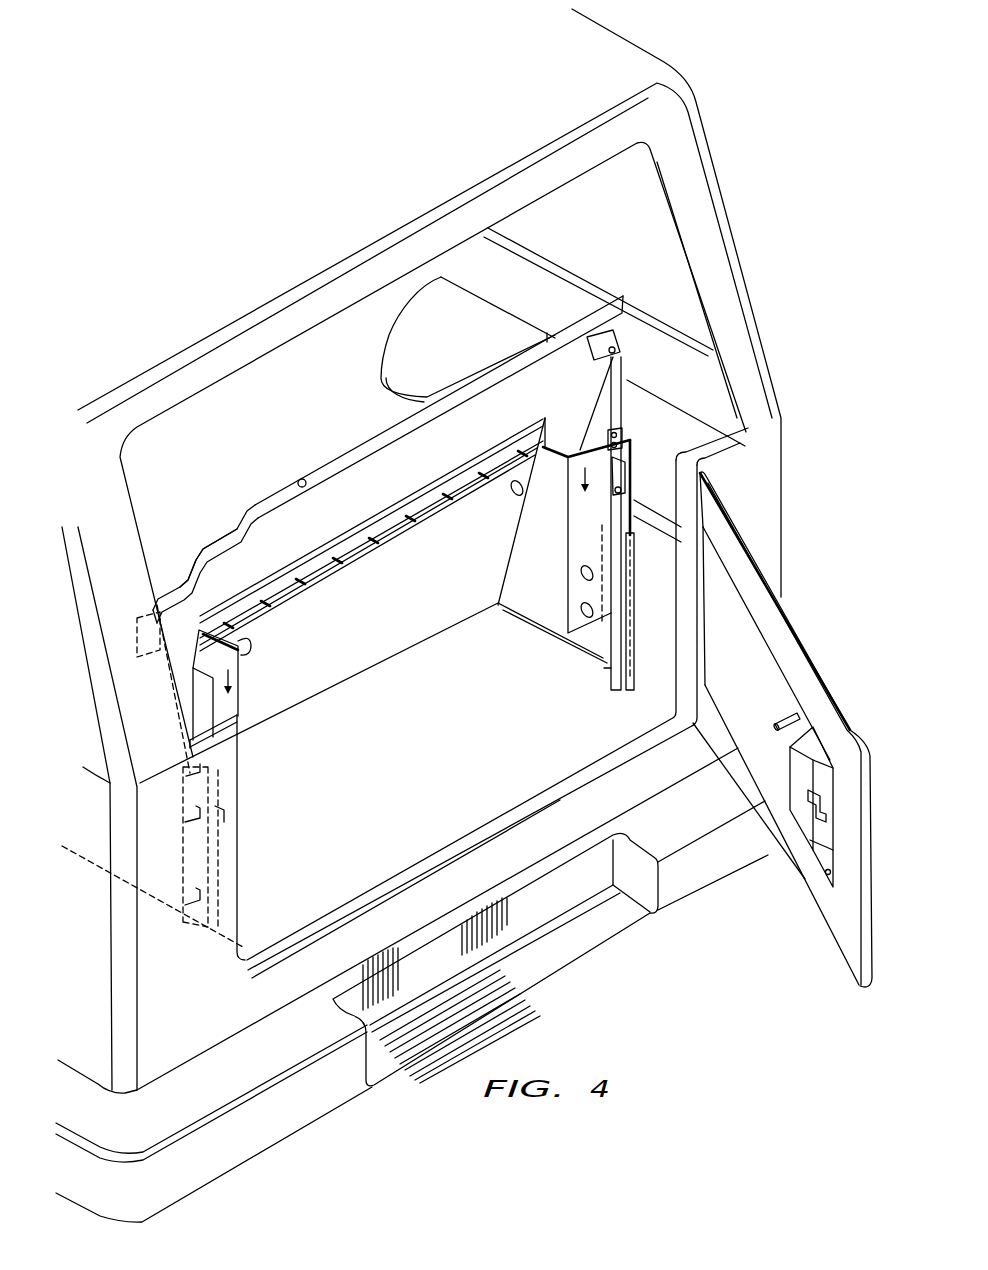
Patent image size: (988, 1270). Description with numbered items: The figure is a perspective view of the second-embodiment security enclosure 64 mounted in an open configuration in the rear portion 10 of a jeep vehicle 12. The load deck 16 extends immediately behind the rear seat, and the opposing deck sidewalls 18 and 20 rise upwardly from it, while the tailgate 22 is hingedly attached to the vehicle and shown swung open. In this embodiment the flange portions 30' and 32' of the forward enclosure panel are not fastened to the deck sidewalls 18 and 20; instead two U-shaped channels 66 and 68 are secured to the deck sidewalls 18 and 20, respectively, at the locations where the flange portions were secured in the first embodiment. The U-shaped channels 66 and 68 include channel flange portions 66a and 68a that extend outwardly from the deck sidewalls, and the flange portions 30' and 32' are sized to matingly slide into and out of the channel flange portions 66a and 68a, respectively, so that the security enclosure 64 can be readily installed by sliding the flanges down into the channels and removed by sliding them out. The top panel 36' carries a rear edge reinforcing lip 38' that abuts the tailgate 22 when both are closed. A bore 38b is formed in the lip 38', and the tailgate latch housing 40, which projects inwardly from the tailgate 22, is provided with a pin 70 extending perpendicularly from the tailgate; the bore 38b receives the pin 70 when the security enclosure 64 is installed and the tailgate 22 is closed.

The rear portion 10 is at (789, 179).
The vehicle 12 is at (708, 116).
The load deck 16 is at (434, 770).
The deck sidewall 18 is at (670, 624).
The deck sidewall 20 is at (242, 870).
The tailgate 22 is at (812, 646).
The flange portion 30' is at (564, 495).
The flange portion 32' is at (189, 685).
The top panel 36' is at (371, 535).
The rear edge reinforcing lip 38' is at (388, 459).
The bore 38b is at (300, 479).
The tailgate latch housing 40 is at (788, 772).
The security enclosure 64 is at (255, 486).
The U-shaped channel 66 is at (617, 672).
The channel flange portion 66a is at (606, 672).
The U-shaped channel 68 is at (197, 915).
The channel flange portion 68a is at (218, 808).
The pin 70 is at (777, 717).